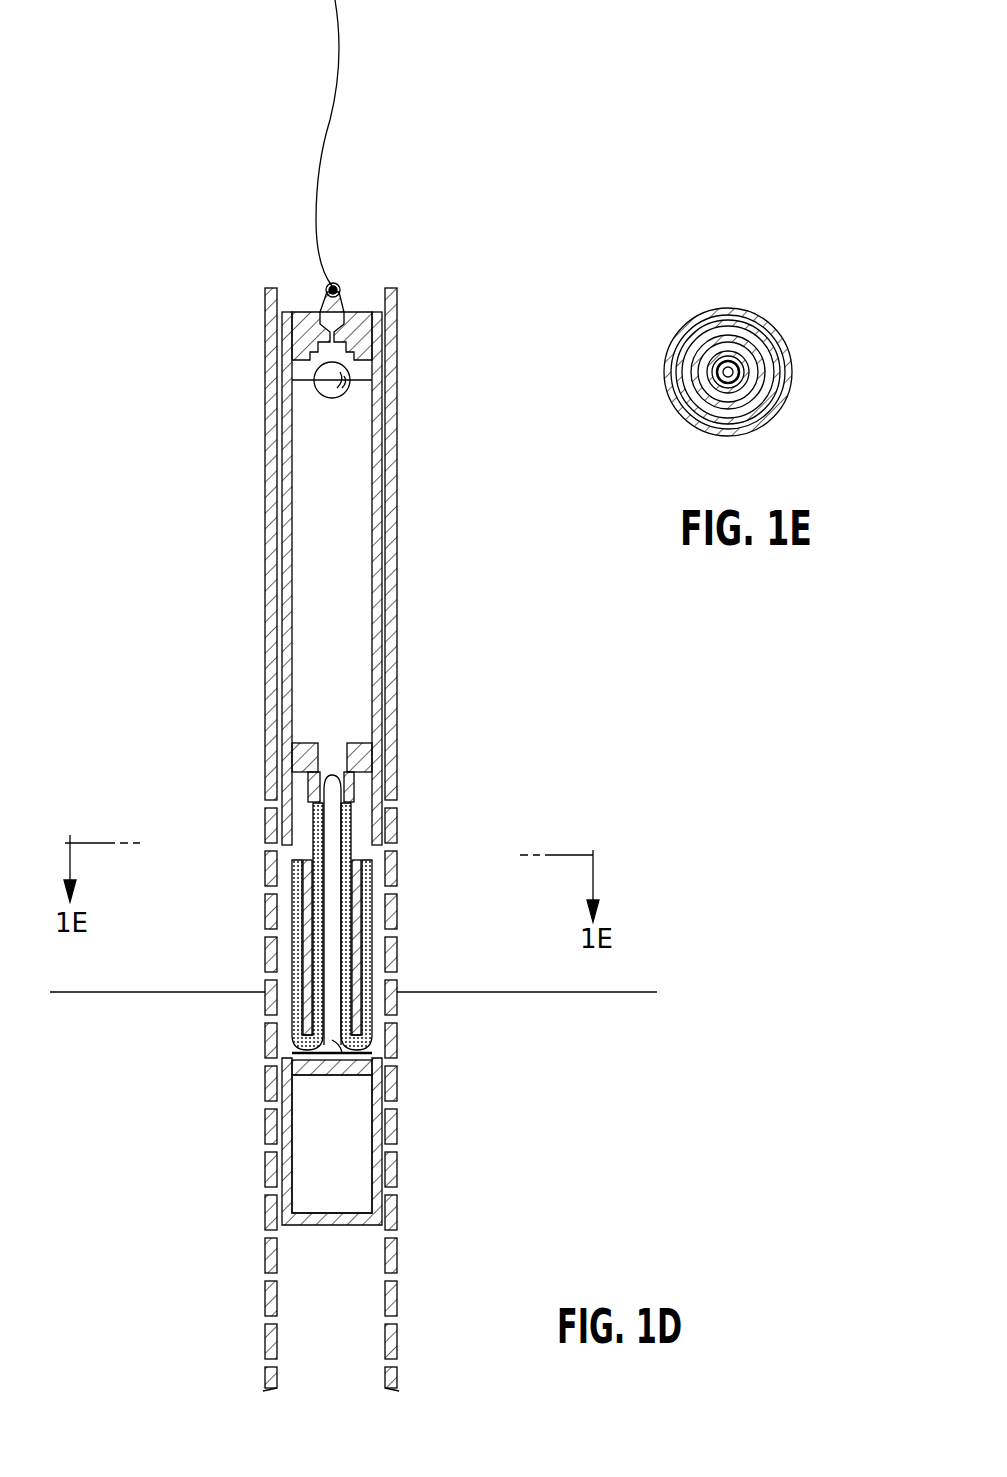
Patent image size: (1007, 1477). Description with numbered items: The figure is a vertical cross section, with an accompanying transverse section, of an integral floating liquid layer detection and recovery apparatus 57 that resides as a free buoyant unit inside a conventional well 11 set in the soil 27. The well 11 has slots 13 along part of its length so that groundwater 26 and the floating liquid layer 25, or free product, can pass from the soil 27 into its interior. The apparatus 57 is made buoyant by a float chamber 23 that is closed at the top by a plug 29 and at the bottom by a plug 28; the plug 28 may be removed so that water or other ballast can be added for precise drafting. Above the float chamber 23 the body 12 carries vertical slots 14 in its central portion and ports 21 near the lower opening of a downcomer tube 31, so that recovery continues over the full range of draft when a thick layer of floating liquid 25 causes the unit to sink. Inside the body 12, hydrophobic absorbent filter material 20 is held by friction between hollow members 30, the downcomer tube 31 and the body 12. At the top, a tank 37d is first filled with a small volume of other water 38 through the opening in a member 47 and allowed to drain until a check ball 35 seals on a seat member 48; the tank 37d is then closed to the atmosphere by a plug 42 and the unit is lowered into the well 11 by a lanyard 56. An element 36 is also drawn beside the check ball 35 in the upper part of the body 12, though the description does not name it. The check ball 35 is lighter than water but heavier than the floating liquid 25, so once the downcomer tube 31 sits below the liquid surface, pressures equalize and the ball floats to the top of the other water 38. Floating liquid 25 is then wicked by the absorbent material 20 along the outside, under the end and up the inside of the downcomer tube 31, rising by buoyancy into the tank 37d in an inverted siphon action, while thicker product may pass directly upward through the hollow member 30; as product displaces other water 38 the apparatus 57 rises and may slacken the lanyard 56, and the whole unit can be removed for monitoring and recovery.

In FIG. 1D, the well 11 is at (400, 548).
In FIG. 1E, the well 11 is at (782, 332).
In FIG. 1D, the body 12 is at (380, 835).
In FIG. 1E, the body 12 is at (782, 400).
In FIG. 1D, the slots 13 is at (393, 975).
In FIG. 1D, the vertical slots 14 is at (290, 868).
In FIG. 1E, the vertical slots 14 is at (678, 410).
In FIG. 1D, the hydrophobic absorbent filter material 20 is at (290, 900).
In FIG. 1D, the ports 21 is at (382, 910).
In FIG. 1D, the float chamber 23 is at (345, 1180).
In FIG. 1D, the floating liquid layer 25 is at (139, 971).
In FIG. 1D, the groundwater 26 is at (94, 1176).
In FIG. 1D, the soil 27 is at (74, 786).
In FIG. 1D, the plug 28 is at (350, 1225).
In FIG. 1D, the plug 29 is at (330, 1068).
In FIG. 1D, the hollow member 30 is at (292, 775).
In FIG. 1E, the hollow member 30 is at (690, 322).
In FIG. 1D, the downcomer tube 31 is at (312, 815).
In FIG. 1E, the downcomer tube 31 is at (732, 352).
In FIG. 1D, the check ball 35 is at (320, 392).
In FIG. 1D, the ball seat 36 is at (352, 392).
In FIG. 1D, the tank 37d is at (320, 561).
In FIG. 1D, the other water 38 is at (338, 703).
In FIG. 1D, the plug 42 is at (343, 287).
In FIG. 1D, the member 47 is at (345, 340).
In FIG. 1D, the seat member 48 is at (372, 752).
In FIG. 1D, the lanyard 56 is at (333, 122).
In FIG. 1D, the integral floating liquid layer detection and recovery apparatus 57 is at (146, 557).